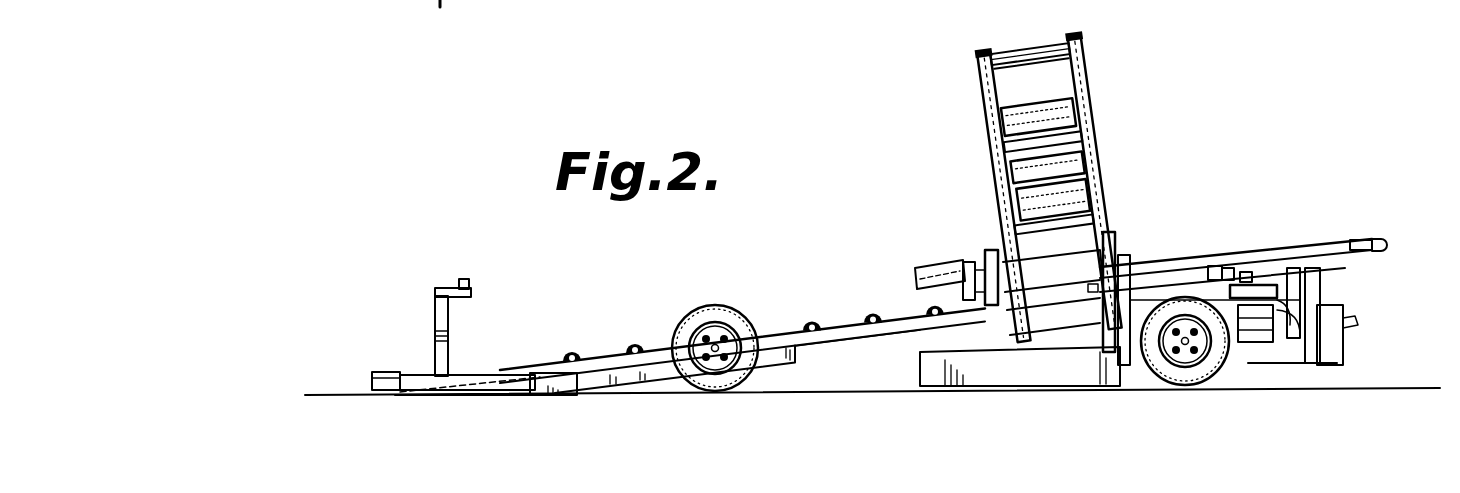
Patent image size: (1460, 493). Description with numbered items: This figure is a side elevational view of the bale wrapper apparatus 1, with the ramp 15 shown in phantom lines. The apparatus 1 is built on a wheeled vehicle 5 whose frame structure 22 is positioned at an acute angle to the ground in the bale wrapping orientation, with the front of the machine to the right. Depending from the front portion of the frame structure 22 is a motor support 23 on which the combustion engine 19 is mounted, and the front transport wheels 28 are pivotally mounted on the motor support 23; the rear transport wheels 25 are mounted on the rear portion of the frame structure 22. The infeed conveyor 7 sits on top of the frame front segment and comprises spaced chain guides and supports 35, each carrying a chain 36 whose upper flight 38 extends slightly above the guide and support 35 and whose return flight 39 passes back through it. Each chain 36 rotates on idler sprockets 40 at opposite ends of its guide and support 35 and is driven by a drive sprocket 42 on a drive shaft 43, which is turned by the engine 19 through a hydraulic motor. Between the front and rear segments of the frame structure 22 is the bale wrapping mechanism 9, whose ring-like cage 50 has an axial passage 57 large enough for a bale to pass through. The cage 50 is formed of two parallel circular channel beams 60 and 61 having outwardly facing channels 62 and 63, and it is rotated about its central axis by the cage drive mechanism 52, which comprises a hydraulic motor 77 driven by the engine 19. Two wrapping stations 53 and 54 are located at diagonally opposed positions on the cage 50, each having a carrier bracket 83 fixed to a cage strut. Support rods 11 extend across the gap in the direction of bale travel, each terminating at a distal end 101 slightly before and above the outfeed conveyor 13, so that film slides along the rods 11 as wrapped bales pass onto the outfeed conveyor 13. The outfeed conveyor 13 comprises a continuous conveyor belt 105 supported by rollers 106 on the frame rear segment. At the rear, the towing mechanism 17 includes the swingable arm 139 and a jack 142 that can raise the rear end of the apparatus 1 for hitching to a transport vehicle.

The bale wrapper apparatus 1 is at (872, 252).
The wheeled vehicle 5 is at (859, 348).
The infeed conveyor 7 is at (1305, 246).
The bale wrapping mechanism 9 is at (1096, 152).
The support rods 11 is at (1040, 297).
The outfeed conveyor 13 is at (582, 364).
The ramp 15 is at (477, 396).
The towing mechanism 17 is at (384, 372).
The combustion engine 19 is at (1250, 342).
The frame structure 22 is at (793, 350).
The motor support 23 is at (1331, 356).
The rear transport wheels 25 is at (722, 393).
The front transport wheels 28 is at (1168, 390).
The chain guide and support 35 is at (1140, 285).
The chain 36 is at (1128, 270).
The upper flight 38 is at (1348, 243).
The return flight 39 is at (1247, 273).
The idler sprockets 40 is at (1094, 283).
The drive sprocket 42 is at (1212, 268).
The drive shaft 43 is at (1226, 268).
The cage 50 is at (1087, 78).
The cage drive mechanism 52 is at (968, 262).
The wrapping station 53 is at (1090, 100).
The wrapping station 54 is at (1096, 197).
The axial passage 57 is at (946, 181).
The circular channel beam 60 is at (1085, 60).
The circular channel beam 61 is at (975, 103).
The outwardly facing channel 62 is at (1076, 44).
The outwardly facing channel 63 is at (978, 56).
The hydraulic motor 77 is at (931, 282).
The carrier bracket 83 is at (1095, 125).
The distal end 101 is at (1011, 265).
The conveyor belt 105 is at (768, 334).
The rollers 106 is at (830, 332).
The swingable arm 139 is at (403, 394).
The jack 142 is at (441, 323).